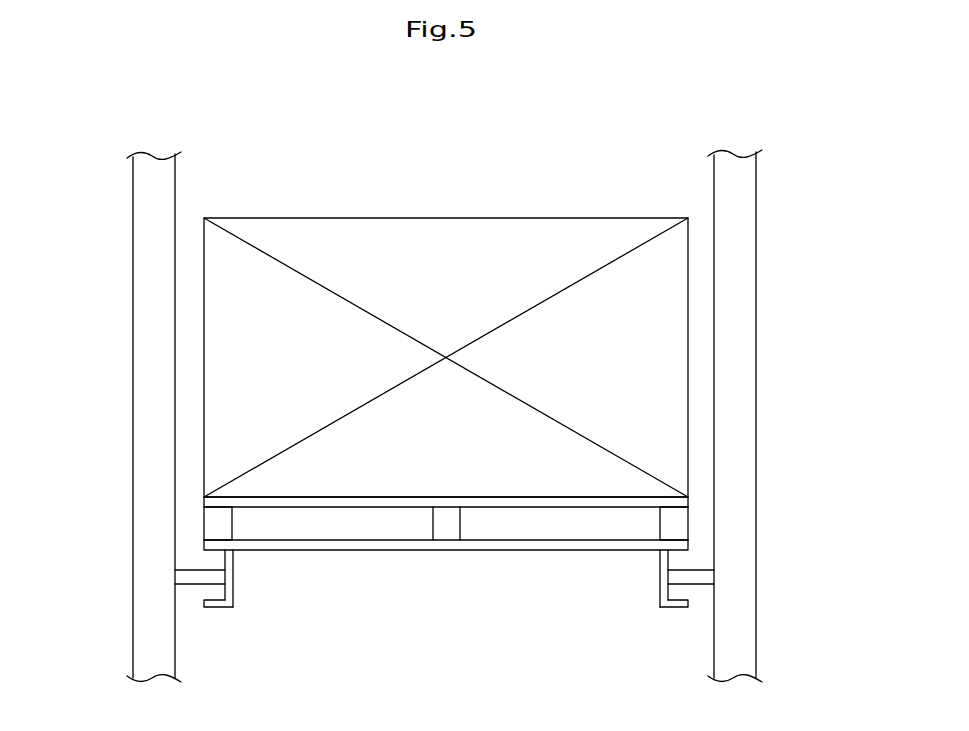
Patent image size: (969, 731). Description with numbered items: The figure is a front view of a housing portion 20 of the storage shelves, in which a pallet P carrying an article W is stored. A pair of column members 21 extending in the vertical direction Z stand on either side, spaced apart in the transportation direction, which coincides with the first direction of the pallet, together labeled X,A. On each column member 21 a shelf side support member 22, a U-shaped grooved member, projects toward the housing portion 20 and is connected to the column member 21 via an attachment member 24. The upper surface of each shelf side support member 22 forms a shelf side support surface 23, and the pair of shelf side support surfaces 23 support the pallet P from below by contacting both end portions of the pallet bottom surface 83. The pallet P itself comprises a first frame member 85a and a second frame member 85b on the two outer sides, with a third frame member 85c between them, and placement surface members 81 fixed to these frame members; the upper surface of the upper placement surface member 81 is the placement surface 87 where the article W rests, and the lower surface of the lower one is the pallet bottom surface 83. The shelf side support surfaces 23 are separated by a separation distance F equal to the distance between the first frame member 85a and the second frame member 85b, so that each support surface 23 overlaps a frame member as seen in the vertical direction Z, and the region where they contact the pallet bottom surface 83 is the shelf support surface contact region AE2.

The housing portion 20 is at (540, 193).
The column member 21 is at (155, 250).
The shelf side support member 22 is at (235, 630).
The shelf side support surface 23 is at (220, 543).
The attachment member 24 is at (198, 590).
The placement surface member 81 is at (395, 505).
The pallet bottom surface 83 is at (395, 551).
The first frame member 85a is at (673, 523).
The second frame member 85b is at (218, 523).
The third frame member 85c is at (445, 523).
The placement surface 87 is at (513, 496).
The article W is at (444, 217).
The pallet P is at (190, 527).
The separation distance F is at (232, 643).
The vertical direction Z is at (840, 268).
The shelf support surface contact region AE2 is at (157, 643).
The transportation direction and first direction X,A is at (363, 111).